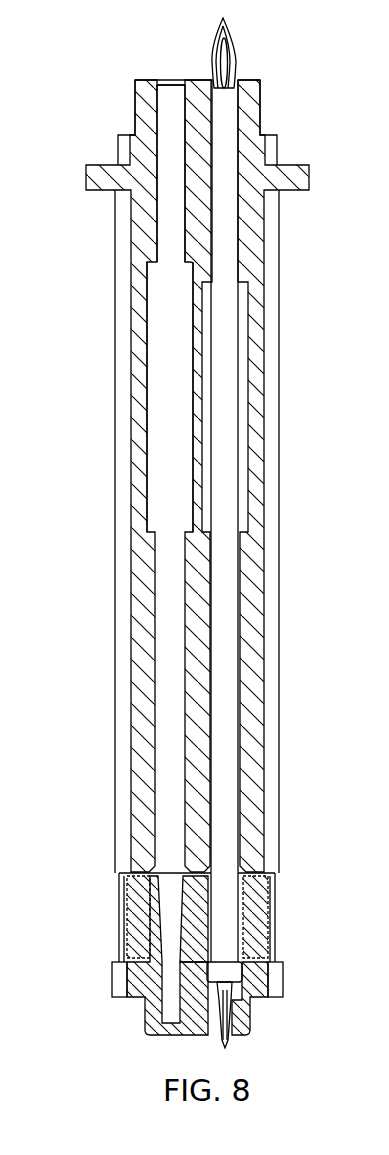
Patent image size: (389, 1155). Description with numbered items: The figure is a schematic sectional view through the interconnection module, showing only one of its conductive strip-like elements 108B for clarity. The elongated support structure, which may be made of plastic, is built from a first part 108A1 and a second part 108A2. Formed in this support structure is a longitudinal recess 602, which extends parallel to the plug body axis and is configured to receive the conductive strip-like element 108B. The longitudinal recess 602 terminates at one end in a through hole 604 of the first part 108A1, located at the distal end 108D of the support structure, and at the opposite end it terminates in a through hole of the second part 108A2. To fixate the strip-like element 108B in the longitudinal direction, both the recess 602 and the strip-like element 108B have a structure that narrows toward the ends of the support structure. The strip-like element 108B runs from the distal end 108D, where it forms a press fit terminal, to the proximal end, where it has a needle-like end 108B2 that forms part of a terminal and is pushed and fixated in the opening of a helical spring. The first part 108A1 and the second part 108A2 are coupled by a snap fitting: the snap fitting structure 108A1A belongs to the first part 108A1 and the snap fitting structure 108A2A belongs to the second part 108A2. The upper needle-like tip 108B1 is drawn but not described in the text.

The distal end 108D is at (113, 116).
The through hole 604 is at (168, 98).
The longitudinal recess 602 is at (172, 425).
The first part 108A1 is at (143, 562).
The conductive strip-like element 108B is at (220, 520).
The proximal needle tip 108B1 is at (236, 60).
The needle-like end 108B2 is at (232, 1013).
The snap fitting structure of the first part 108A1A is at (275, 933).
The snap fitting structure of the second part 108A2A is at (262, 898).
The second part 108A2 is at (277, 980).